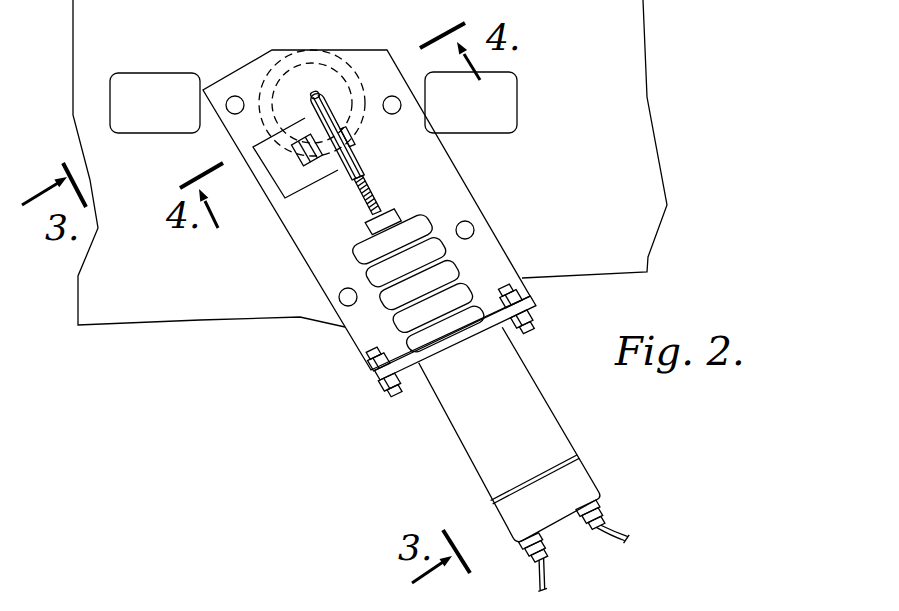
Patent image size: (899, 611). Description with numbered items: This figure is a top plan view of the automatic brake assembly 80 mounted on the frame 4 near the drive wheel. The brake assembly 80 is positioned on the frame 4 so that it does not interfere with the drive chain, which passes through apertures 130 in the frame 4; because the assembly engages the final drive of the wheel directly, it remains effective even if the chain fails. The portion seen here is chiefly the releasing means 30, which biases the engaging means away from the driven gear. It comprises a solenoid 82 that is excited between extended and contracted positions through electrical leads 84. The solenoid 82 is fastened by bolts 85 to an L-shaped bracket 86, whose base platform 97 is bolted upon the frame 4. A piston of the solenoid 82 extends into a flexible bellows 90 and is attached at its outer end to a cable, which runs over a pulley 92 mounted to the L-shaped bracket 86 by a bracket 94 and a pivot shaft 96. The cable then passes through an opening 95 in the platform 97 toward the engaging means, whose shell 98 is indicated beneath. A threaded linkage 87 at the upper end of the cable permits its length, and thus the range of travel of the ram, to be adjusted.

The frame 4 is at (660, 193).
The apertures 130 is at (168, 73).
The platform 97 is at (357, 323).
The shell 98 is at (310, 53).
The bracket 94 is at (298, 186).
The pivot shaft 96 is at (296, 140).
The pulley 92 is at (362, 163).
The opening 95 is at (307, 97).
The threaded linkage 87 is at (380, 198).
The flexible bellows 90 is at (427, 218).
The bolts 85 is at (398, 403).
The L-shaped bracket 86 is at (328, 152).
The solenoid 82 is at (545, 428).
The electrical leads 84 is at (545, 582).
The brake assembly 80 is at (130, 604).
The releasing means 30 is at (345, 607).